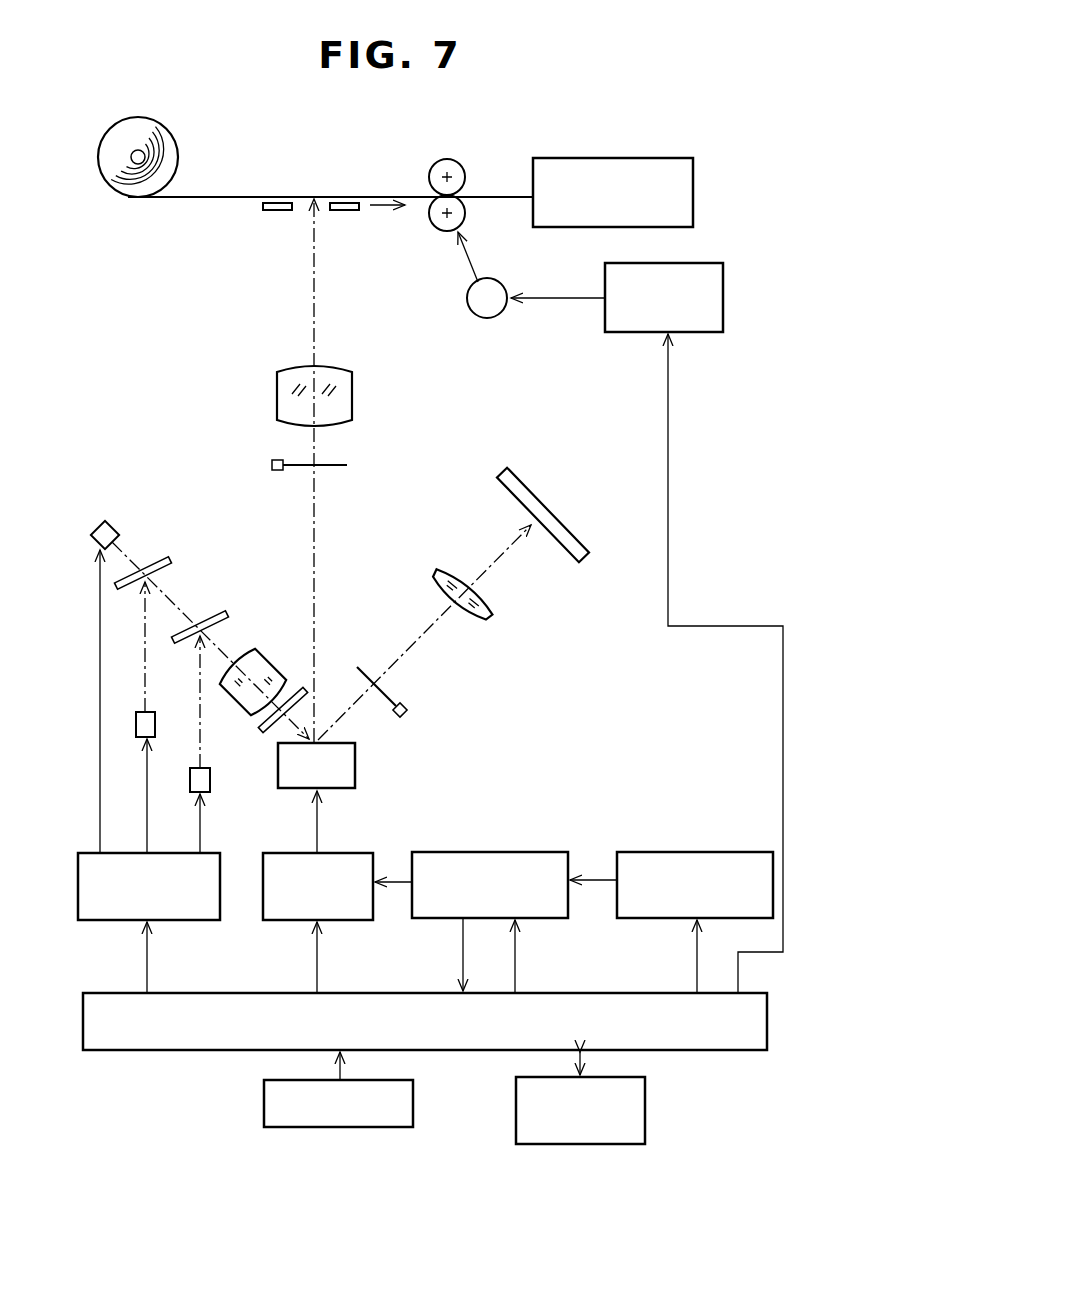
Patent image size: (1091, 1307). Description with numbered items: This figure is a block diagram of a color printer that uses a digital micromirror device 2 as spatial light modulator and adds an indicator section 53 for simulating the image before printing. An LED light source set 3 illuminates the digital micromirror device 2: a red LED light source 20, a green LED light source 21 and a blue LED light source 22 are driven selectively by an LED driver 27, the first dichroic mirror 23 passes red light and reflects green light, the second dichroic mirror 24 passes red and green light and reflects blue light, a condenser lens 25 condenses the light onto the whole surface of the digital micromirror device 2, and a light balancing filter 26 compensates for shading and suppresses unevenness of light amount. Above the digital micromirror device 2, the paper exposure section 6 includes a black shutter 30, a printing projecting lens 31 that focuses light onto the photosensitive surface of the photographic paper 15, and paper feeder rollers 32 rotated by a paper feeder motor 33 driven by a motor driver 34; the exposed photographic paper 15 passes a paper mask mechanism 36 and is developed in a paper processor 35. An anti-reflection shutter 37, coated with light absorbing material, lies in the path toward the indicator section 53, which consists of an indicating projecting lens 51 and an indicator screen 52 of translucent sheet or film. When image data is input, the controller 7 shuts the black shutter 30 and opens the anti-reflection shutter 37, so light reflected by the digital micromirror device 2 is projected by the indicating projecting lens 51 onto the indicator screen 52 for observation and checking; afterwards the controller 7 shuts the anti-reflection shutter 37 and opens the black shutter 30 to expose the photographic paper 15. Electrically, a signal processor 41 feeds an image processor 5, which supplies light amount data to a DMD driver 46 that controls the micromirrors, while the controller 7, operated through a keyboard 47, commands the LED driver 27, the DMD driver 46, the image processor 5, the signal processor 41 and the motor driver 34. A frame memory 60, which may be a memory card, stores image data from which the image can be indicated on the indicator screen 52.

The digital micromirror device 2 is at (355, 760).
The LED light source set 3 is at (159, 506).
The image processor 5 is at (484, 852).
The paper exposure section 6 is at (394, 299).
The controller 7 is at (589, 993).
The photographic paper 15 is at (232, 196).
The red LED light source 20 is at (93, 528).
The green LED light source 21 is at (140, 712).
The blue LED light source 22 is at (196, 768).
The first dichroic mirror 23 is at (170, 562).
The second dichroic mirror 24 is at (226, 616).
The condenser lens 25 is at (272, 666).
The light balancing filter 26 is at (266, 724).
The LED driver 27 is at (194, 920).
The black shutter 30 is at (272, 465).
The printing projecting lens 31 is at (277, 393).
The paper feeder rollers 32 is at (447, 159).
The paper feeder motor 33 is at (489, 318).
The motor driver 34 is at (696, 332).
The paper processor 35 is at (615, 158).
The paper mask mechanism 36 is at (276, 212).
The anti-reflection shutter 37 is at (360, 672).
The signal processor 41 is at (696, 852).
The DMD driver 46 is at (274, 853).
The keyboard 47 is at (339, 1127).
The indicating projecting lens 51 is at (446, 566).
The indicator screen 52 is at (504, 473).
The indicator section 53 is at (537, 619).
The frame memory 60 is at (645, 1112).